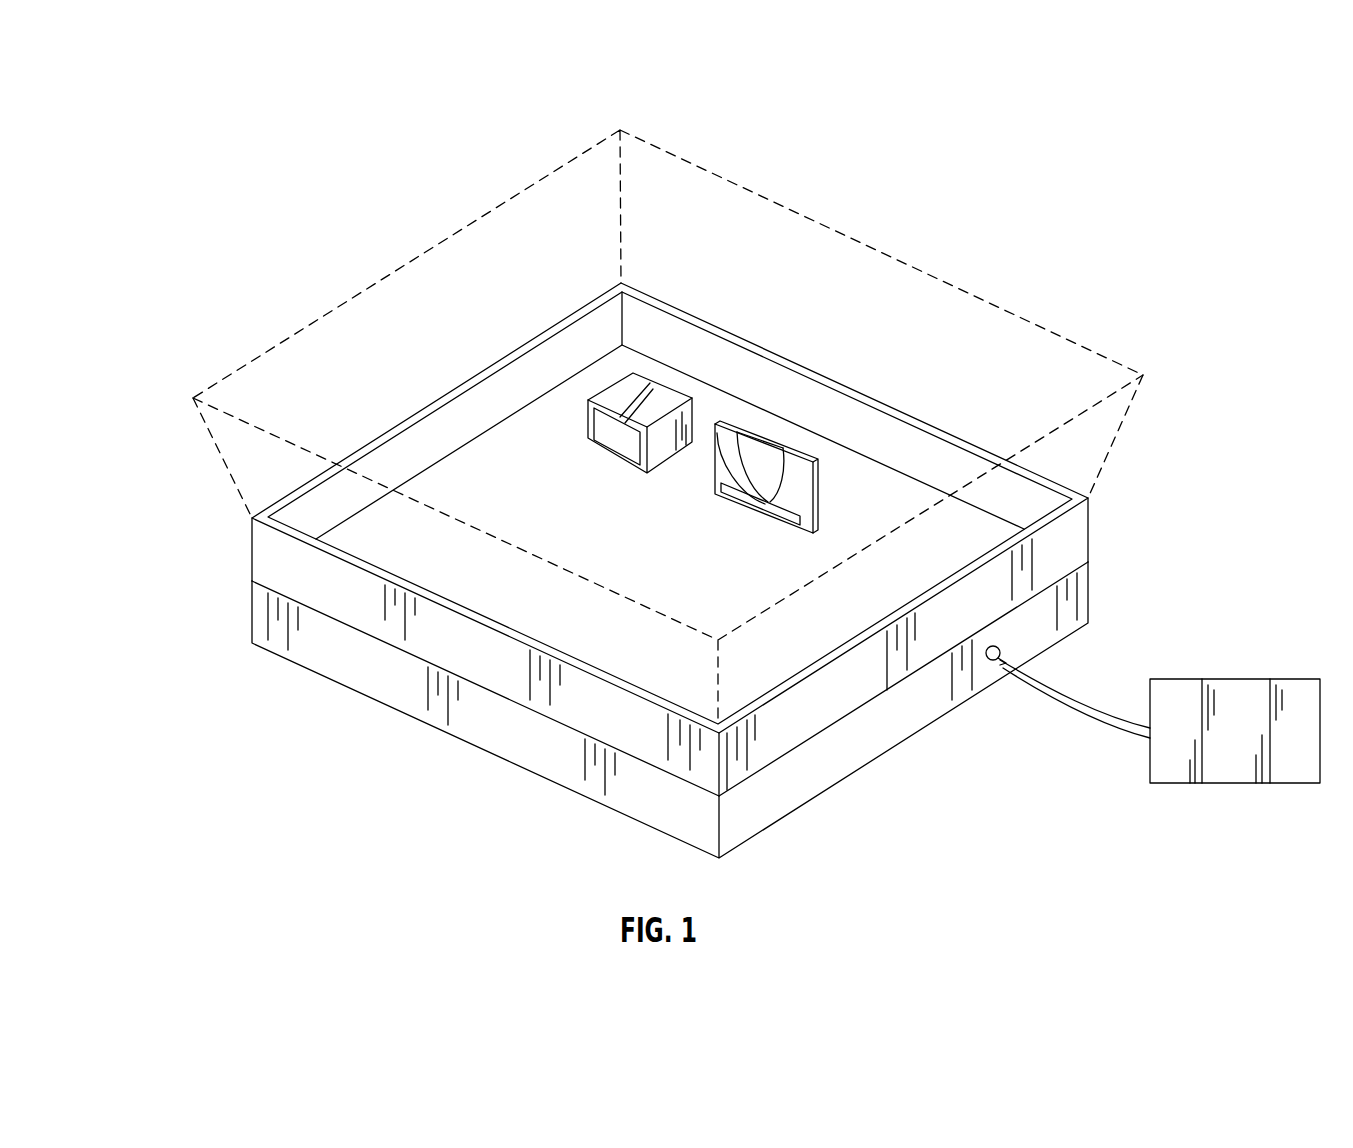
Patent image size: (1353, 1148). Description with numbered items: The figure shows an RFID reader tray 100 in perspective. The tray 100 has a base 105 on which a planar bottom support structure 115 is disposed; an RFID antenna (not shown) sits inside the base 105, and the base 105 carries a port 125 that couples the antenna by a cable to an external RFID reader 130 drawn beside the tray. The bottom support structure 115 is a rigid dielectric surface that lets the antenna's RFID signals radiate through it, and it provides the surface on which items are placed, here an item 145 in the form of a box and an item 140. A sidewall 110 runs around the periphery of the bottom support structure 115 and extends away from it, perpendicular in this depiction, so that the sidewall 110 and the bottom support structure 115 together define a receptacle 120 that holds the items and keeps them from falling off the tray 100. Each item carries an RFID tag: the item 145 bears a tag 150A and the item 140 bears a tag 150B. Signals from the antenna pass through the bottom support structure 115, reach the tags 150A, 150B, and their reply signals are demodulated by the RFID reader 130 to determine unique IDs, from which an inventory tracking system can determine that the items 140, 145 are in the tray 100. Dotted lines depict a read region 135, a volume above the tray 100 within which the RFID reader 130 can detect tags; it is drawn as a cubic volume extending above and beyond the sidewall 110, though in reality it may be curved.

The RFID reader tray 100 is at (305, 159).
The base 105 is at (1090, 595).
The sidewall 110 is at (1090, 517).
The bottom support structure 115 is at (463, 588).
The receptacle 120 is at (600, 647).
The port 125 is at (997, 649).
The RFID reader 130 is at (1150, 747).
The read region 135 is at (884, 250).
The item 140 is at (815, 470).
The item 145 is at (697, 422).
The RFID tag 150A is at (607, 435).
The RFID tag 150B is at (733, 494).